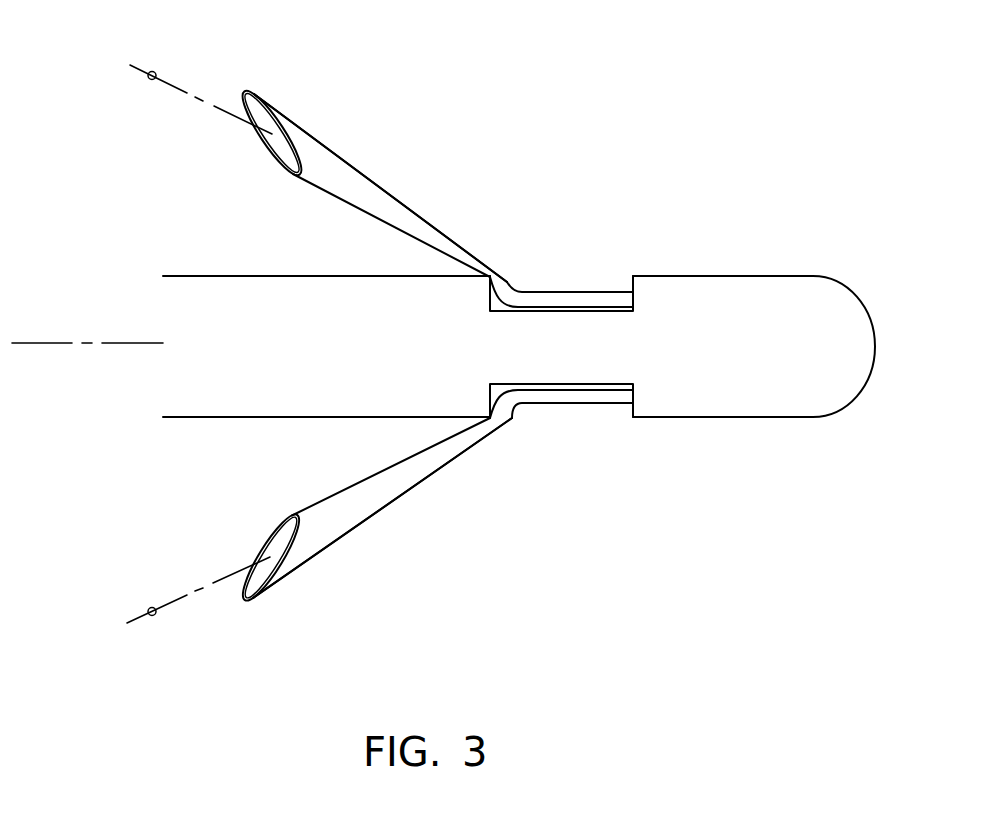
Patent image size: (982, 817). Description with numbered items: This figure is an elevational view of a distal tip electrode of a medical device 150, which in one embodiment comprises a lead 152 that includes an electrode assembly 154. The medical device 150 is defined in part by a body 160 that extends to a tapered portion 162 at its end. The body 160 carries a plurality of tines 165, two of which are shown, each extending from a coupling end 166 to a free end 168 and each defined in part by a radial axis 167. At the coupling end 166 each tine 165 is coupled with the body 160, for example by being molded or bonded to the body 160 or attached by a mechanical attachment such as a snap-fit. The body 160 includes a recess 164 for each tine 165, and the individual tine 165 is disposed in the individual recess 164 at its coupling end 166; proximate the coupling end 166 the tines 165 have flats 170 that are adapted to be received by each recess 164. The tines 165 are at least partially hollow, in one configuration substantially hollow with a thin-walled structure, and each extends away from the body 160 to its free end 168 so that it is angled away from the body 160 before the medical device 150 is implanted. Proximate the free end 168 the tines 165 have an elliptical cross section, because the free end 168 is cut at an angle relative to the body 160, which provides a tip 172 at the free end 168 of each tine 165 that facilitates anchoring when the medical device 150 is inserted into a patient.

The medical device 150 is at (643, 600).
The lead 152 is at (615, 70).
The electrode assembly 154 is at (631, 115).
The body 160 is at (218, 418).
The tapered portion 162 is at (848, 402).
The recess 164 is at (620, 282).
The tine 165 is at (382, 183).
The coupling end 166 is at (515, 287).
The radial axis 167 is at (158, 72).
The free end 168 is at (310, 132).
The flats 170 is at (563, 298).
The tip 172 is at (258, 92).